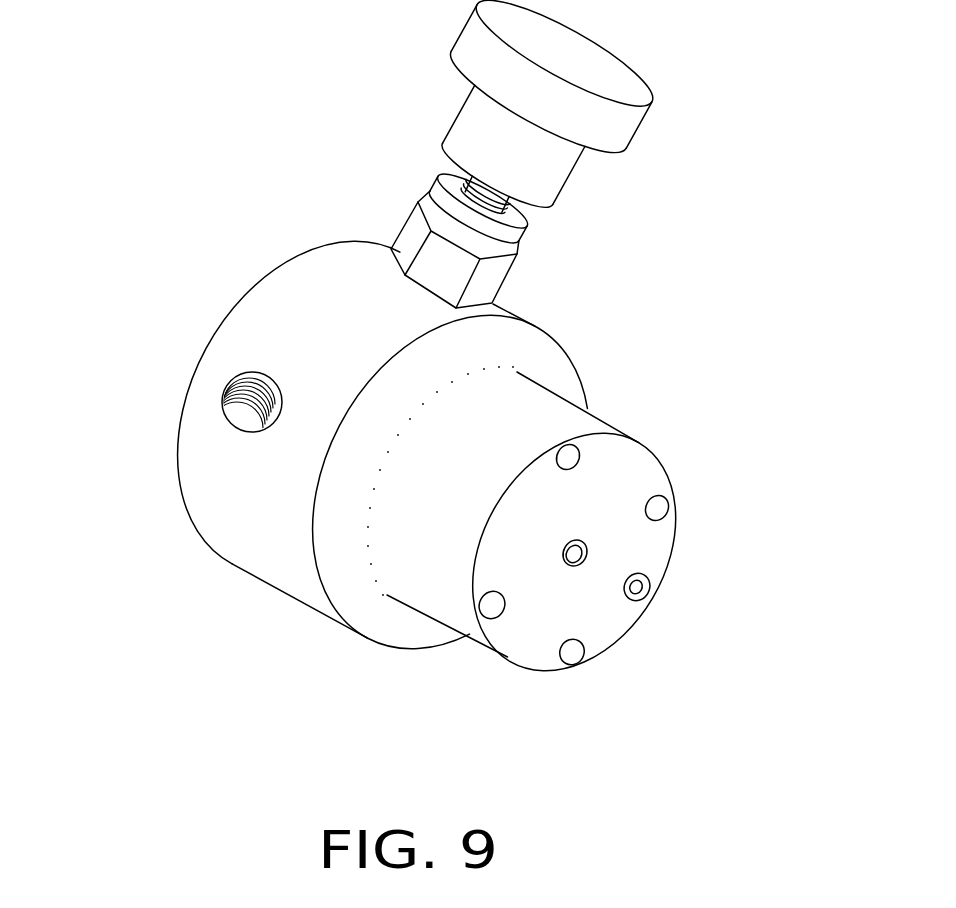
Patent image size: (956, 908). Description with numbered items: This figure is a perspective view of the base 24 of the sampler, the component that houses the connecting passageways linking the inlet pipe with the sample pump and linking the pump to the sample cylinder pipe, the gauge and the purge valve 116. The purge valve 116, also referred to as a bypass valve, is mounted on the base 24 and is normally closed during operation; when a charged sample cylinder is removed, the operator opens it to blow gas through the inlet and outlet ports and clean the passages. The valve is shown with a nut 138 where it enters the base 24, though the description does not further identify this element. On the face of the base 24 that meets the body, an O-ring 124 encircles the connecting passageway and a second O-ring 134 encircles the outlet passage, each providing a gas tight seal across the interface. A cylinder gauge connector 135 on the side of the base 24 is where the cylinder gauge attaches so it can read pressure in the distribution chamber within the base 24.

The base 24 is at (288, 315).
The purge valve 116 is at (705, 100).
The O-ring 124 is at (640, 589).
The O-ring 134 is at (573, 563).
The cylinder gauge connector 135 is at (240, 417).
The adjusting nut 138 is at (481, 257).